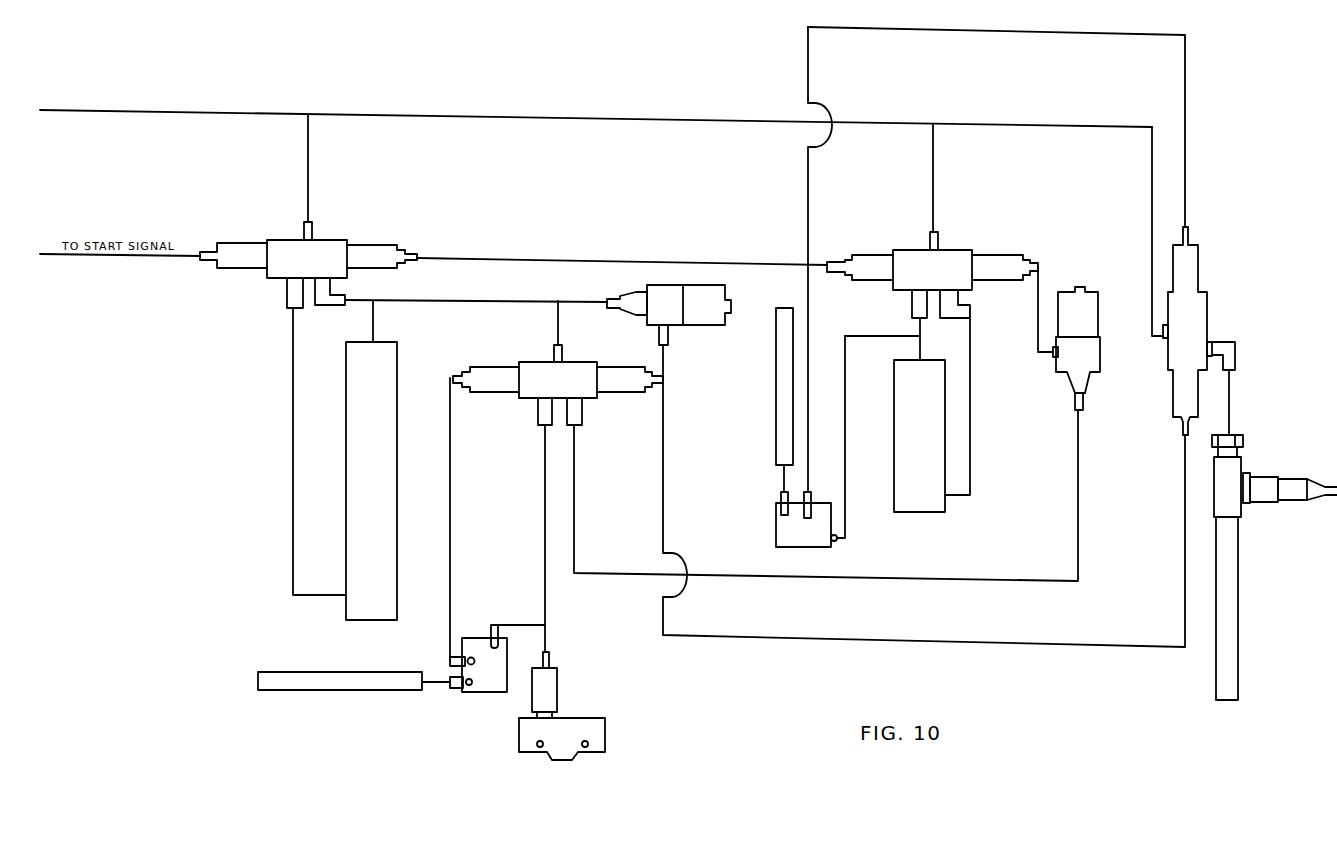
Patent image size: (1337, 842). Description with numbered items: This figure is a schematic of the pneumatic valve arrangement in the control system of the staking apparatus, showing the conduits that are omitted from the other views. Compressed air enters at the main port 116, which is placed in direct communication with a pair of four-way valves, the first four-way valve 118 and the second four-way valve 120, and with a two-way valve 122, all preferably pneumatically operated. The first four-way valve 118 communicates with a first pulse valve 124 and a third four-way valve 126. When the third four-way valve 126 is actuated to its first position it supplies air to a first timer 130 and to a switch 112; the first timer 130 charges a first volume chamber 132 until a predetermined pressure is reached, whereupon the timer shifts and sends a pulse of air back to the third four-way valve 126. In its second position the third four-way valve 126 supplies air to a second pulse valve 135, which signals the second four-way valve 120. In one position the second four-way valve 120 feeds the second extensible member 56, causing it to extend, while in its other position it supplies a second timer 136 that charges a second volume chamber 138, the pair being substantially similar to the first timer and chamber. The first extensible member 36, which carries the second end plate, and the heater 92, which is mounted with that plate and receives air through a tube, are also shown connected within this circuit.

The first extensible member 36 is at (384, 485).
The second extensible member 56 is at (928, 437).
The heater 92 is at (1230, 582).
The switch 112 is at (567, 729).
The main port 116 is at (96, 110).
The first four-way valve 118 is at (337, 246).
The second four-way valve 120 is at (953, 264).
The two-way valve 122 is at (1197, 308).
The first pulse valve 124 is at (698, 318).
The third four-way valve 126 is at (535, 373).
The first timer 130 is at (487, 683).
The first volume chamber 132 is at (328, 680).
The second pulse valve 135 is at (1088, 310).
The second timer 136 is at (792, 538).
The second volume chamber 138 is at (779, 421).